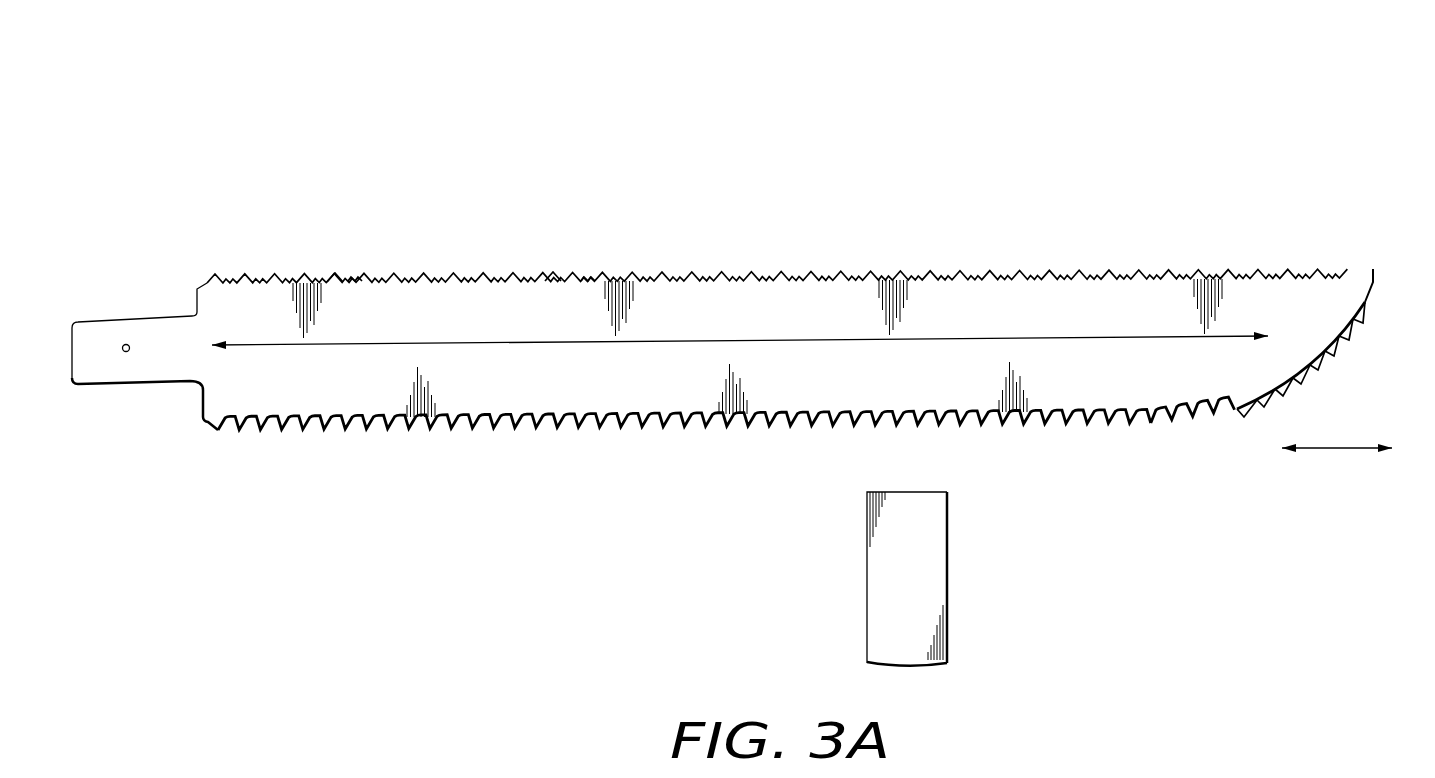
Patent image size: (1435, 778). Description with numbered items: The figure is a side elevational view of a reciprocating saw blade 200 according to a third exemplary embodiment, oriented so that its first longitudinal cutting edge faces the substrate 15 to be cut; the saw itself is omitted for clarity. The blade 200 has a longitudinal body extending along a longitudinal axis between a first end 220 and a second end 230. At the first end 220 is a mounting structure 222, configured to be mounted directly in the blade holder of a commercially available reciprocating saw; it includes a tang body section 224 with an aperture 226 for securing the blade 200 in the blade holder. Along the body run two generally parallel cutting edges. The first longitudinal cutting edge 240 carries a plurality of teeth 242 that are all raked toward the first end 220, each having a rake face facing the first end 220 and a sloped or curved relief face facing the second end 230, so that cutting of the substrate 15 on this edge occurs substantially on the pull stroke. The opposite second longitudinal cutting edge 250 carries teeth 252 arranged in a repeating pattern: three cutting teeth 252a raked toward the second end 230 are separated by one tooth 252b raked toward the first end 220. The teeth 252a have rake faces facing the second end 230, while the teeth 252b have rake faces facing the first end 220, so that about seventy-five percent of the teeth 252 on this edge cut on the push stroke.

The substrate 15 is at (918, 565).
The reciprocating saw blade 200 is at (1183, 239).
The first end 220 is at (163, 345).
The mounting structure 222 is at (190, 270).
The tang body 224 is at (115, 338).
The aperture 226 is at (128, 352).
The second end 230 is at (1310, 317).
The first longitudinal cutting edge 240 is at (680, 424).
The teeth 242 is at (827, 424).
The second longitudinal cutting edge 250 is at (820, 273).
The teeth 252 is at (1012, 273).
The cutting teeth 252a is at (333, 278).
The cutting teeth 252b is at (357, 285).